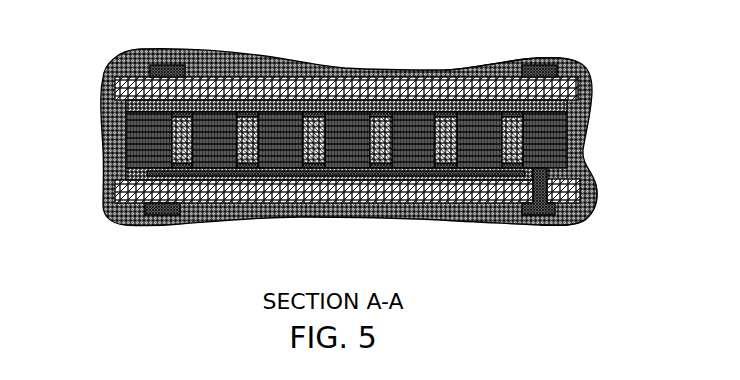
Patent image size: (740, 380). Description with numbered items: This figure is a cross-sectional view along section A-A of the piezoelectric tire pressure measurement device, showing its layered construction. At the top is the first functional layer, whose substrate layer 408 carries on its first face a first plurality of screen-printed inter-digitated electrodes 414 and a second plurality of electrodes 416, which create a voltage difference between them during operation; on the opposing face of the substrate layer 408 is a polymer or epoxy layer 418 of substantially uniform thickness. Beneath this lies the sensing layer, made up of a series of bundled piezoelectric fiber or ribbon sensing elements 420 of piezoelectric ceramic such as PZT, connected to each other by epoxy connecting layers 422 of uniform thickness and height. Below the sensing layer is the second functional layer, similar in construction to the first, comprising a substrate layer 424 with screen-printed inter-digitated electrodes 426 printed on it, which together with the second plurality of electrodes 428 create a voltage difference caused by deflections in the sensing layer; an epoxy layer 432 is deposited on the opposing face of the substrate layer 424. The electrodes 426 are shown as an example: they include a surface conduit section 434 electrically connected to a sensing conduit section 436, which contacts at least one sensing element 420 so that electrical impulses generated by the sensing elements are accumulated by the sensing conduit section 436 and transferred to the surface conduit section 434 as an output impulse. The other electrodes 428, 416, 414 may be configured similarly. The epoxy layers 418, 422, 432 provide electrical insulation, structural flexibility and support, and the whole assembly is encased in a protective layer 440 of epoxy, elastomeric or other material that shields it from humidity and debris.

The substrate layer 408 is at (122, 88).
The first plurality of screen-printed inter-digitated electrodes 414 is at (168, 70).
The second plurality of screen-printed inter-digitated electrodes 416 is at (543, 72).
The polymer or epoxy layer 418 is at (242, 107).
The sensing element 420 is at (145, 140).
The epoxy connecting layer 422 is at (377, 140).
The substrate layer 424 is at (185, 192).
The screen-printed inter-digitated electrodes 426 is at (538, 216).
The second plurality of electrodes 428 is at (160, 210).
The epoxy layer 432 is at (488, 176).
The surface conduit section 434 is at (562, 220).
The sensing conduit section 436 is at (273, 170).
The protective layer 440 is at (483, 68).